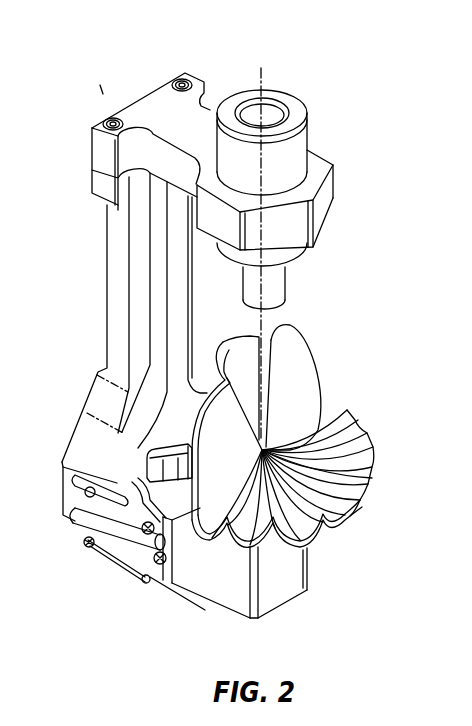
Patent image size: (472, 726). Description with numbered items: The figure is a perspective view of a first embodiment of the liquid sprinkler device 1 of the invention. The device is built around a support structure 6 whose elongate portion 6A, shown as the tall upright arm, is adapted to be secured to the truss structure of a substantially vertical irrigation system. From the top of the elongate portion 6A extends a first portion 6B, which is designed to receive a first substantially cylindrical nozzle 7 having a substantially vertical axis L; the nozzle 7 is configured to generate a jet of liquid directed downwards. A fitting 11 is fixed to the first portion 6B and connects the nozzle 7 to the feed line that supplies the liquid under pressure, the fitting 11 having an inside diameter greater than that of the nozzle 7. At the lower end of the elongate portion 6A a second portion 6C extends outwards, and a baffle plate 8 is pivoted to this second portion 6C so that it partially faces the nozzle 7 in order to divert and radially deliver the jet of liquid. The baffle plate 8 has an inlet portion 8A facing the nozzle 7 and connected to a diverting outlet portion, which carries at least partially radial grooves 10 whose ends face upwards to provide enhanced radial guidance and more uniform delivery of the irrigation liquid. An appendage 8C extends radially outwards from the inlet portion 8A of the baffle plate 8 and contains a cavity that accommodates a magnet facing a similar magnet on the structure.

The sprinkler device 1 is at (100, 85).
The substantially vertical axis L is at (262, 74).
The support structure 6 is at (97, 254).
The elongate portion 6A is at (122, 303).
The first portion 6B is at (200, 115).
The second portion 6C is at (207, 580).
The first nozzle 7 is at (270, 292).
The baffle plate 8 is at (343, 537).
The inlet portion 8A is at (297, 380).
The appendage 8C is at (150, 448).
The radial grooves 10 is at (372, 498).
The fitting 11 is at (293, 158).